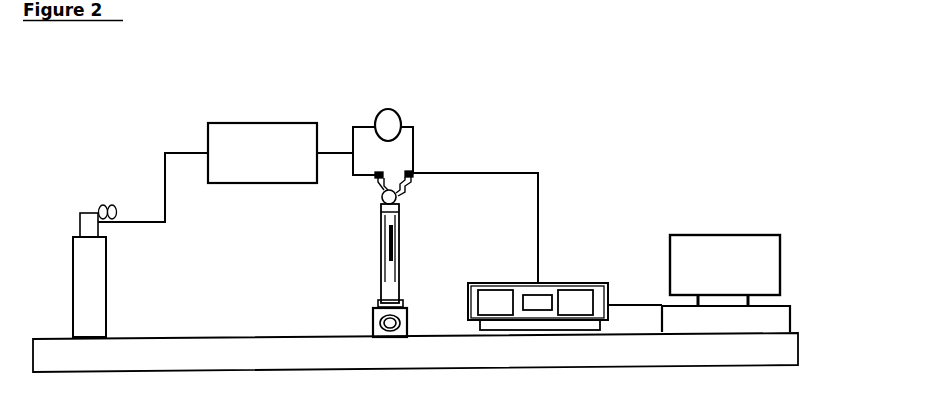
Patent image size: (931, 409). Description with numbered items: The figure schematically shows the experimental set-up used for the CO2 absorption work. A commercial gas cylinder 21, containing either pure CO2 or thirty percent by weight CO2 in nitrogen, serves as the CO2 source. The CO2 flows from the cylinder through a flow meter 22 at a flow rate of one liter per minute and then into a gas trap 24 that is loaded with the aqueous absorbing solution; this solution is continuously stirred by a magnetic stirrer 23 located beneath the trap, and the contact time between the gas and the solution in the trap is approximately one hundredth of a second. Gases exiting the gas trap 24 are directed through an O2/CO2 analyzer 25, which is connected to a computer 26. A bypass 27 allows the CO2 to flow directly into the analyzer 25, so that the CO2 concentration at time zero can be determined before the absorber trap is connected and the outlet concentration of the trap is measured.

The gas cylinder 21 is at (122, 245).
The flow meter 22 is at (280, 141).
The magnetic stirrer 23 is at (374, 321).
The gas trap 24 is at (372, 255).
The O2/CO2 analyzer 25 is at (565, 286).
The computer 26 is at (704, 283).
The bypass 27 is at (445, 183).